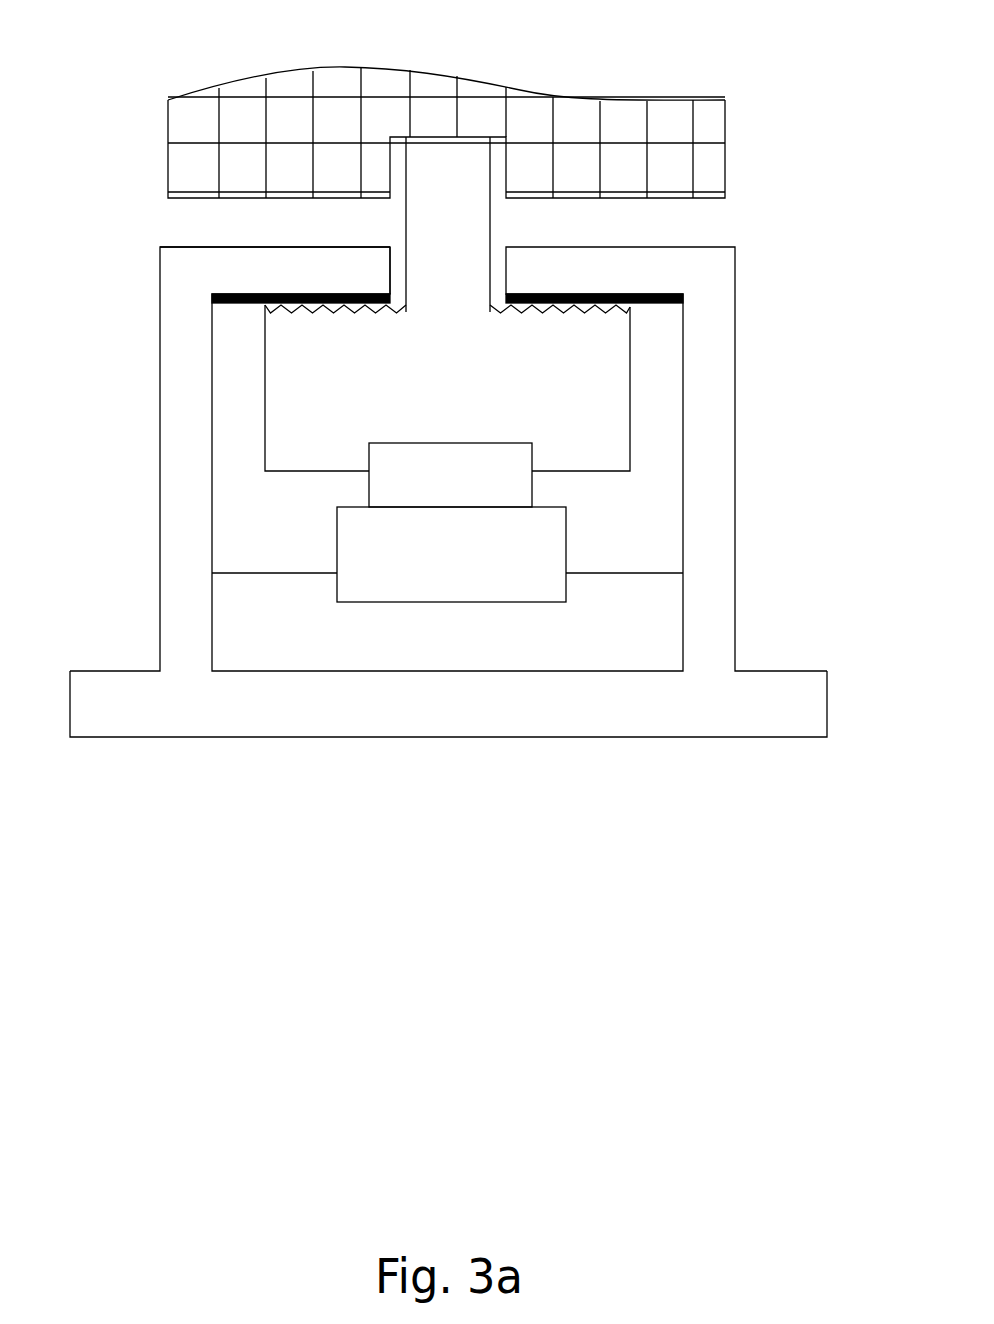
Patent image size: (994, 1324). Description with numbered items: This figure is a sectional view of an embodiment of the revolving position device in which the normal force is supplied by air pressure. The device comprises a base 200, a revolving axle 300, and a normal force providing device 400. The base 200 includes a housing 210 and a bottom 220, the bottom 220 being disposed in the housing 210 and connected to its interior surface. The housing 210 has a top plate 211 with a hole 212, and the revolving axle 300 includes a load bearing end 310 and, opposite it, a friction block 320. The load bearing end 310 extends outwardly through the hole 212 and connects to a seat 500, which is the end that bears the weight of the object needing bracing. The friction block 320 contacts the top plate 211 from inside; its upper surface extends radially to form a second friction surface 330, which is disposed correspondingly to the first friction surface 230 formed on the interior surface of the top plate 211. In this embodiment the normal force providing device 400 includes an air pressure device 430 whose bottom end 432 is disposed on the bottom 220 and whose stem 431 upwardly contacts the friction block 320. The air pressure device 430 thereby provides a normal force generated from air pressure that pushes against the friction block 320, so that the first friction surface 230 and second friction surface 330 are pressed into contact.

The base 200 is at (477, 520).
The housing 210 is at (446, 434).
The top plate 211 is at (210, 247).
The hole 212 is at (401, 216).
The bottom 220 is at (383, 640).
The first friction surface 230 is at (240, 294).
The revolving axle 300 is at (562, 235).
The load bearing end 310 is at (447, 137).
The friction block 320 is at (630, 357).
The second friction surface 330 is at (628, 305).
The normal force providing device 400 is at (478, 663).
The air pressure device 430 is at (541, 671).
The stem 431 is at (532, 488).
The bottom end 432 is at (506, 602).
The seat 500 is at (725, 117).